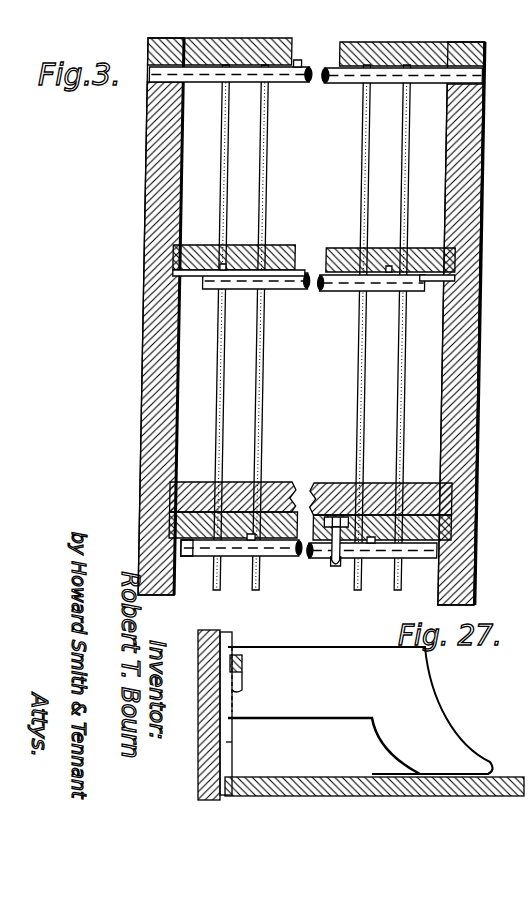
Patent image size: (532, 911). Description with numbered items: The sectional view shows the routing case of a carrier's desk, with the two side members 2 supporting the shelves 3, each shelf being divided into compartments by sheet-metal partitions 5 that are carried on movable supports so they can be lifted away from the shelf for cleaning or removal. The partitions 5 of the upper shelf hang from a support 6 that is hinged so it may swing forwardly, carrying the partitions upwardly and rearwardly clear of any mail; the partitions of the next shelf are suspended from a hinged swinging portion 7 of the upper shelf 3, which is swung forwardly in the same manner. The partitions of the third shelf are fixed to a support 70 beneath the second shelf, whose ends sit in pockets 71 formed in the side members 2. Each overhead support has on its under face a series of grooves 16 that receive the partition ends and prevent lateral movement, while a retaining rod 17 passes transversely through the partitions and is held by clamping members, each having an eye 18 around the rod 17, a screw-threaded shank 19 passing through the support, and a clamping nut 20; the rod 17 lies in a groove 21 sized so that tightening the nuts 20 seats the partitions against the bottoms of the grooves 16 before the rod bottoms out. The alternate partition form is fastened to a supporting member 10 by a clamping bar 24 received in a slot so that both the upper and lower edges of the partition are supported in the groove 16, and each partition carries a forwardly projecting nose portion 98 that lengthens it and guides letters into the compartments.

In FIG. 3, the side member 2 is at (157, 343).
In FIG. 3, the shelf 3 is at (292, 480).
In FIG. 27, the shelf 3 is at (498, 778).
In FIG. 3, the partition 5 is at (408, 166).
In FIG. 27, the partition 5 is at (400, 725).
In FIG. 3, the support 6 is at (355, 70).
In FIG. 3, the swinging portion of the shelf 7 is at (282, 247).
In FIG. 27, the supporting member 10 is at (200, 772).
In FIG. 3, the groove 16 is at (299, 62).
In FIG. 27, the groove 16 is at (234, 742).
In FIG. 3, the retaining rod 17 is at (308, 84).
In FIG. 3, the eye 18 is at (346, 568).
In FIG. 27, the eye 18 is at (288, 653).
In FIG. 3, the screw-threaded shank 19 is at (334, 562).
In FIG. 3, the clamping nut 20 is at (345, 514).
In FIG. 27, the clamping nut 20 is at (525, 674).
In FIG. 3, the groove 21 is at (346, 248).
In FIG. 27, the clamping bar 24 is at (246, 660).
In FIG. 3, the support 70 is at (216, 560).
In FIG. 3, the pocket 71 is at (180, 522).
In FIG. 27, the nose portion 98 is at (470, 760).